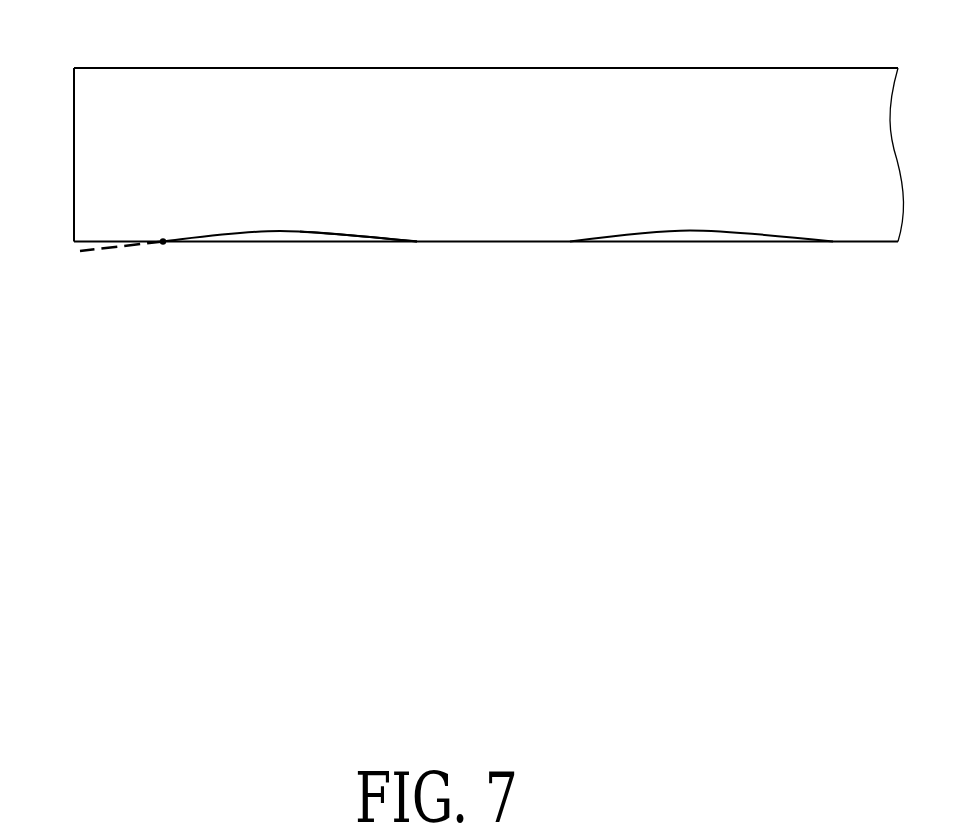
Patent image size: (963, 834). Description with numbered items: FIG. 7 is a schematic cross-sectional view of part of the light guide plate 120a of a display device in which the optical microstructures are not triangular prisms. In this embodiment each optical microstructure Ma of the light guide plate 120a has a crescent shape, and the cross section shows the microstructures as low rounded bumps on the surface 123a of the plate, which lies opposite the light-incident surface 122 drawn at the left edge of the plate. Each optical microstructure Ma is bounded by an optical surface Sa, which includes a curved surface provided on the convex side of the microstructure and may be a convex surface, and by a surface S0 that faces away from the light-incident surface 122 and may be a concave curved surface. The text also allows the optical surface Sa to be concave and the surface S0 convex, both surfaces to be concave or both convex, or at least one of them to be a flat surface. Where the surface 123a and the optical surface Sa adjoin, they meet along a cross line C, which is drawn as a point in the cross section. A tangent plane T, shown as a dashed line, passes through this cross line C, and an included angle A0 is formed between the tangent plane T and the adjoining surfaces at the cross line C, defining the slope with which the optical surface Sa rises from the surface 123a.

The light guide plate 120a is at (142, 97).
The light-incident surface 122 is at (73, 110).
The surface 123a is at (484, 243).
The optical surface Sa is at (257, 230).
The surface S0 is at (346, 234).
The optical microstructure Ma is at (656, 231).
The tangent plane T is at (87, 255).
The cross line C is at (166, 246).
The included angle A0 is at (207, 239).